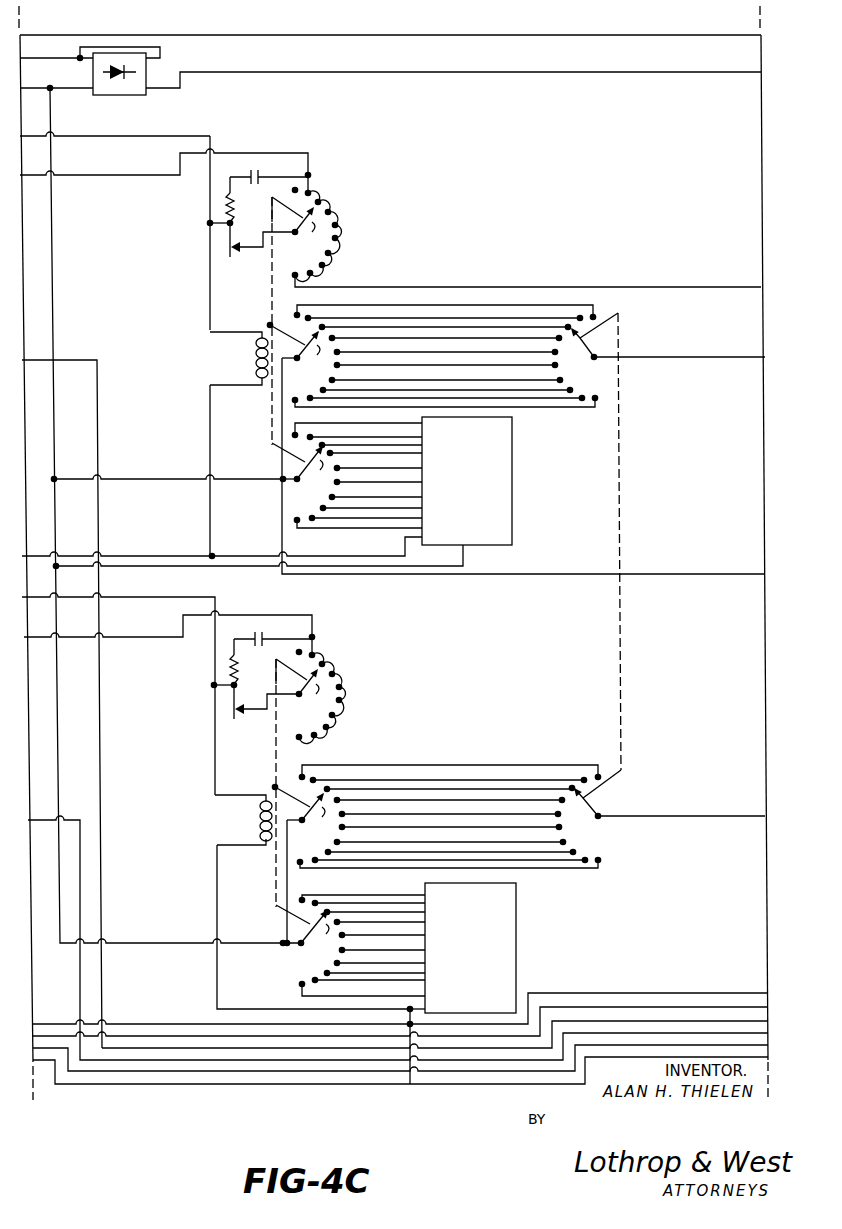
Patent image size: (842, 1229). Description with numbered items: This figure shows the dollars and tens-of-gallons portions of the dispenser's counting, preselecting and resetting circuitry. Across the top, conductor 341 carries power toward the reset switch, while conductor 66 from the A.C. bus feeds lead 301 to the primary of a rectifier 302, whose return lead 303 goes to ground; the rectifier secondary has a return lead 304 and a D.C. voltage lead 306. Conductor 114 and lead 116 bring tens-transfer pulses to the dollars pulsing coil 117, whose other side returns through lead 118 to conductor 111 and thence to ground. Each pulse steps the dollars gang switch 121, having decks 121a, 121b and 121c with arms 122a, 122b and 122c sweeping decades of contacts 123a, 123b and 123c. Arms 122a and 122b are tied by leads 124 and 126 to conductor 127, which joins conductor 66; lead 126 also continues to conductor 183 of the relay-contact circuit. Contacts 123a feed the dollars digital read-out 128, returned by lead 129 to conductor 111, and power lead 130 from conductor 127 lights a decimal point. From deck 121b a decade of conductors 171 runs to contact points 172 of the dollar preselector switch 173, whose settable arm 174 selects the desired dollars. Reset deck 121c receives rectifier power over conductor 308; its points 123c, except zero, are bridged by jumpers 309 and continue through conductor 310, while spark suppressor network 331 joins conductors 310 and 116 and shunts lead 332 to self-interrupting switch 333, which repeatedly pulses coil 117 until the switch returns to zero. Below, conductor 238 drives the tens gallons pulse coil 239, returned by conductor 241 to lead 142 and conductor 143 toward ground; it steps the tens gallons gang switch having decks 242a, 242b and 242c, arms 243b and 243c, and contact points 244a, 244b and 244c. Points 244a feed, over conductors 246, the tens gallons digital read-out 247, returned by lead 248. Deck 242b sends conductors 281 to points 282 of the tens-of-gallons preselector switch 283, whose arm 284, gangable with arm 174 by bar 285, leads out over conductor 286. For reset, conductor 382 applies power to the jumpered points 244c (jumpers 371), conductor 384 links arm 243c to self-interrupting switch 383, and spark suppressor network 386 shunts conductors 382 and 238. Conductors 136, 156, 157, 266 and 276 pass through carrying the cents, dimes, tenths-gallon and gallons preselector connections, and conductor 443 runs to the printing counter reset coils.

The conductor 341 is at (71, 33).
The return lead 304 is at (166, 52).
The return lead 303 is at (40, 68).
The D.C. voltage lead 306 is at (719, 66).
The conductor 66 is at (32, 102).
The lead 301 is at (62, 100).
The rectifier 302 is at (118, 95).
The conductor 114 is at (100, 146).
The spark suppressor network 331 is at (220, 184).
The conductor 310 is at (326, 160).
The lead 332 is at (268, 236).
The contacts 123c is at (330, 209).
The switch arm 122c is at (316, 227).
The reset deck 121c is at (287, 266).
The jumpers 309 is at (338, 233).
The lead 116 is at (206, 290).
The self-interrupting switch 333 is at (224, 263).
The conductor 308 is at (723, 278).
The contacts 123b is at (286, 316).
The conductors 171 is at (452, 306).
The contact points 172 is at (594, 316).
The preselector arm 174 is at (582, 346).
The dollar preselector switch 173 is at (590, 372).
The dollars pulsing coil 117 is at (254, 358).
The switch arm 122b is at (311, 353).
The deck 121b is at (296, 389).
The lead 118 is at (212, 458).
The dollars gang switch 121 is at (272, 443).
The lead 124 is at (284, 460).
The switch arm 122a is at (320, 466).
The deck 121a is at (300, 488).
The lead 126 is at (140, 490).
The contacts 123a is at (296, 516).
The digital read-out mechanism 128 is at (504, 518).
The gang bar 285 is at (621, 513).
The conductor 111 is at (188, 546).
The conductor 183 is at (216, 548).
The lead 129 is at (379, 550).
The power lead 130 is at (471, 565).
The conductor 156 is at (72, 365).
The conductor 127 is at (54, 334).
The conductor 238 is at (151, 594).
The conductor 382 is at (140, 663).
The spark suppressor network 386 is at (224, 646).
The conductor 384 is at (262, 721).
The self-interrupting switch 383 is at (234, 732).
The contact points 244c is at (326, 672).
The jumpers 371 is at (336, 714).
The switch arm 243c is at (320, 689).
The deck 242c is at (312, 745).
The tens gallons pulse coil 239 is at (252, 823).
The conductor 241 is at (216, 884).
The deck 242b is at (302, 841).
The switch arm 243b is at (302, 920).
The contact points 244b is at (334, 767).
The conductors 281 is at (486, 758).
The tens of gallons preselector switch 283 is at (586, 833).
The contact points 282 is at (600, 767).
The settable arm 284 is at (601, 806).
The conductor 286 is at (726, 810).
The deck 242a is at (310, 951).
The contact points 244a is at (315, 898).
The conductors 246 is at (373, 888).
The tens gallons digital read-out 247 is at (518, 898).
The lead 248 is at (428, 1006).
The conductor 276 is at (70, 806).
The conductor 157 is at (98, 790).
The conductor 143 is at (147, 1014).
The lead 142 is at (586, 1054).
The conductor 443 is at (203, 1004).
The conductor 136 is at (140, 1072).
The lead 266 is at (202, 1084).